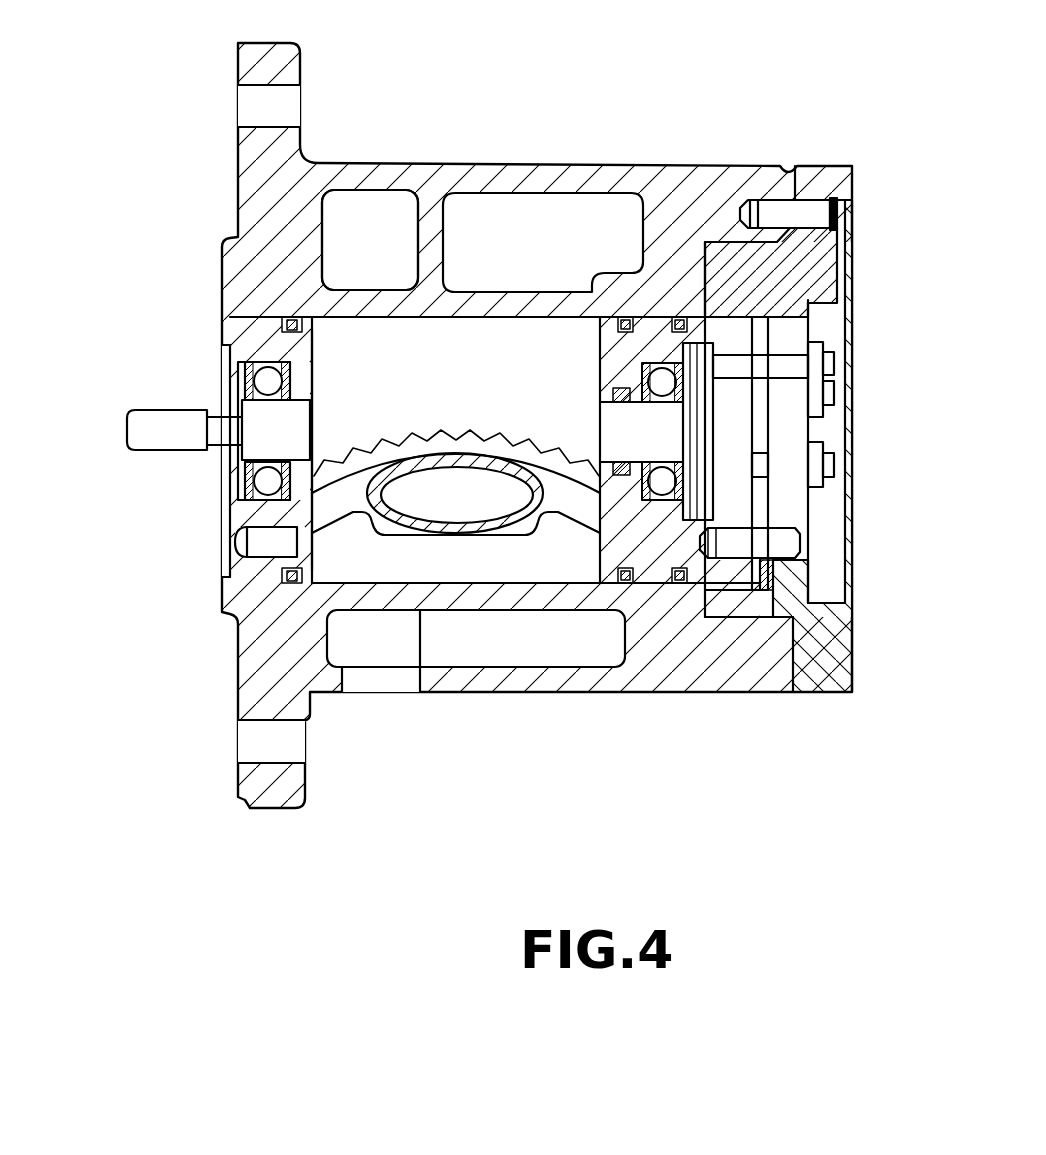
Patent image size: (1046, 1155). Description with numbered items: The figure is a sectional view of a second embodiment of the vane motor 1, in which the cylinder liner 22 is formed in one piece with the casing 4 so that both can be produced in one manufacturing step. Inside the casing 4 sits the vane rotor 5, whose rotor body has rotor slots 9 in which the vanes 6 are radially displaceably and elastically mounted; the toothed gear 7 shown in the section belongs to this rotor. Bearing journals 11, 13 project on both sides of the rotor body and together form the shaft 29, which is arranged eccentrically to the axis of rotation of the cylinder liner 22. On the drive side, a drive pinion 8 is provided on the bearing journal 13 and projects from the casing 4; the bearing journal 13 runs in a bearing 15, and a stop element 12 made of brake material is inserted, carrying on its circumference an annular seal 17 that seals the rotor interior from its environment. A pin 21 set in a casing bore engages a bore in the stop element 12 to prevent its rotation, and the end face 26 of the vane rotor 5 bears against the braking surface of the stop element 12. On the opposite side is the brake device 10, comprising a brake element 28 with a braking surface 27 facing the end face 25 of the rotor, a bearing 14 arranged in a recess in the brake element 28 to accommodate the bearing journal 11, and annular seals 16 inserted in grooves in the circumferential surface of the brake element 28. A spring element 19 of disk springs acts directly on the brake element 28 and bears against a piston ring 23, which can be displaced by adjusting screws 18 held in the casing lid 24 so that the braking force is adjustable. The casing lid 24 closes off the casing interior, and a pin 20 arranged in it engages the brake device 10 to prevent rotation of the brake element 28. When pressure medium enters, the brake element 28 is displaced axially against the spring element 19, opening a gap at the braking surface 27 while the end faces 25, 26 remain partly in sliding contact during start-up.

The vane motor 1 is at (778, 116).
The casing 4 is at (495, 183).
The vane rotor 5 is at (330, 433).
The vanes 6 is at (335, 572).
The gear 7 is at (368, 493).
The drive pinion 8 is at (127, 432).
The rotor slots 9 is at (323, 520).
The brake device 10 is at (658, 617).
The bearing journal 11 is at (672, 435).
The stop element 12 is at (300, 343).
The bearing journal 13 is at (215, 425).
The bearing 14 is at (645, 363).
The bearing 15 is at (258, 365).
The annular seals 16 is at (684, 322).
The annular seal 17 is at (290, 318).
The adjusting screws 18 is at (834, 362).
The spring element 19 is at (715, 357).
The pin 20 is at (834, 530).
The pin 21 is at (260, 533).
The cylinder liner 22 is at (385, 297).
The piston ring 23 is at (745, 497).
The casing lid 24 is at (828, 268).
The end face 25 is at (612, 577).
The end face 26 is at (310, 560).
The braking surface 27 is at (592, 570).
The brake element 28 is at (707, 573).
The shaft 29 is at (125, 468).